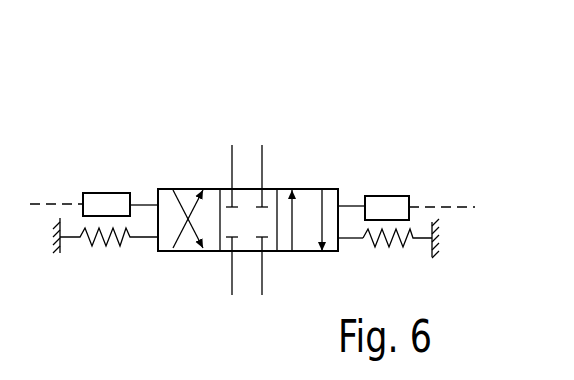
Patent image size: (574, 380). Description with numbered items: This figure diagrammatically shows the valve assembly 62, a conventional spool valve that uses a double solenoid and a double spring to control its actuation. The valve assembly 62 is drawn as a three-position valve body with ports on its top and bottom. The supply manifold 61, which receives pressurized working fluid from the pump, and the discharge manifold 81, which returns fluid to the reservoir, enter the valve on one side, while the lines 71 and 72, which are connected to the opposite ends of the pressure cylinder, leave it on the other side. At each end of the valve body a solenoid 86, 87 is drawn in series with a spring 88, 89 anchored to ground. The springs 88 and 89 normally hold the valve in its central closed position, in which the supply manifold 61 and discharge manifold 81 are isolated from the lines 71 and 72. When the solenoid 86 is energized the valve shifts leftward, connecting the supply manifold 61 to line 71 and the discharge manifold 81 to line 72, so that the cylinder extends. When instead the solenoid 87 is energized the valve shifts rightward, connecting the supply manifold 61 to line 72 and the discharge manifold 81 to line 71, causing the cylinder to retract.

The valve assembly 62 is at (316, 168).
The line 71 is at (230, 167).
The line 72 is at (263, 166).
The supply manifold 61 is at (232, 281).
The discharge manifold 81 is at (262, 278).
The solenoid 86 is at (111, 192).
The solenoid 87 is at (410, 196).
The spring 88 is at (92, 241).
The spring 89 is at (396, 241).